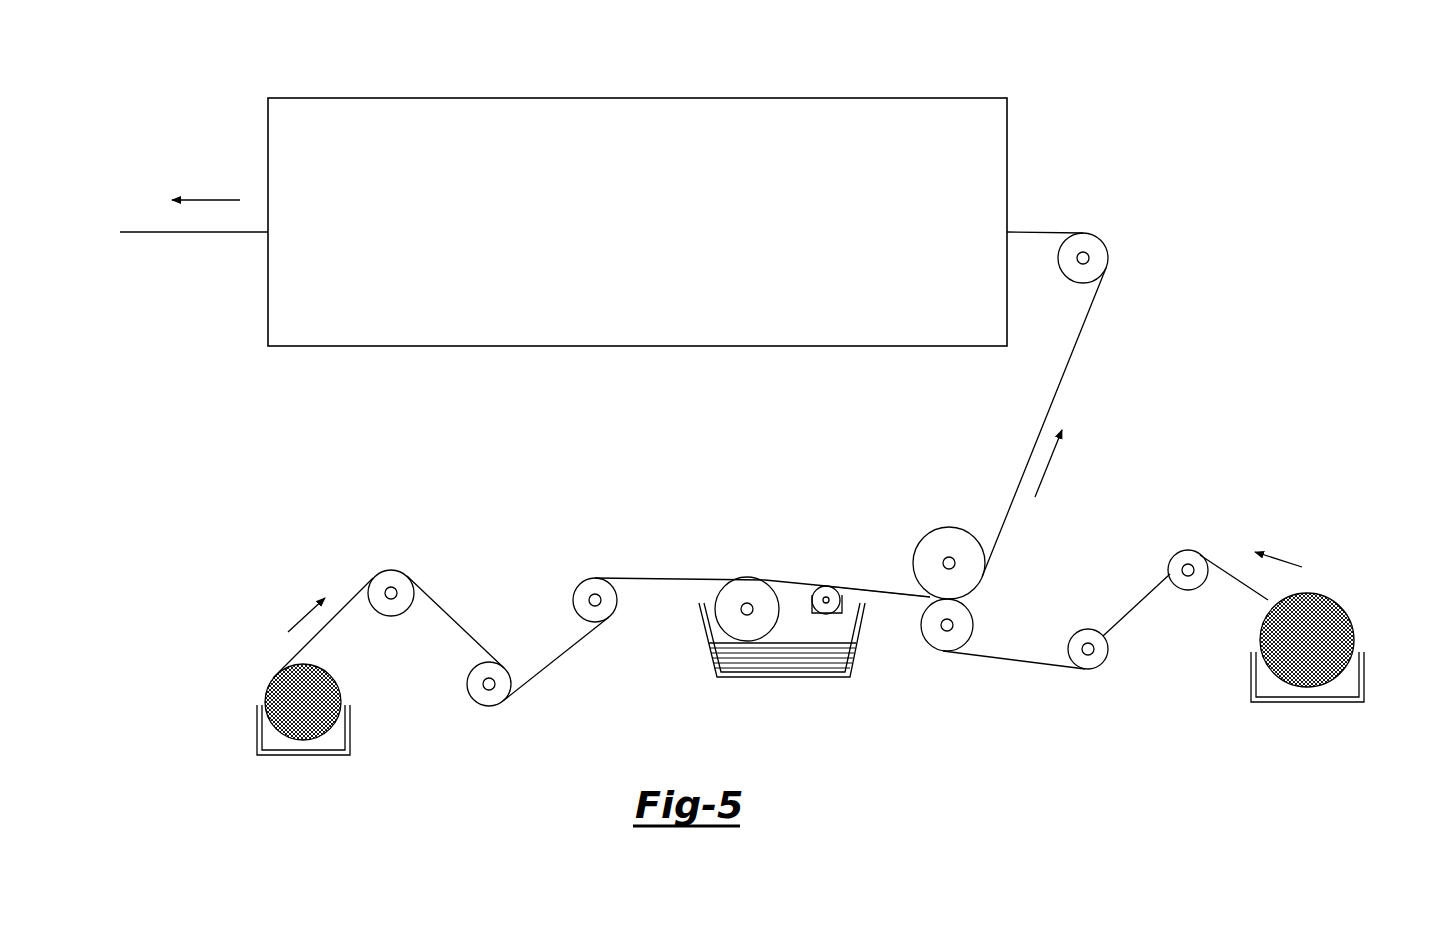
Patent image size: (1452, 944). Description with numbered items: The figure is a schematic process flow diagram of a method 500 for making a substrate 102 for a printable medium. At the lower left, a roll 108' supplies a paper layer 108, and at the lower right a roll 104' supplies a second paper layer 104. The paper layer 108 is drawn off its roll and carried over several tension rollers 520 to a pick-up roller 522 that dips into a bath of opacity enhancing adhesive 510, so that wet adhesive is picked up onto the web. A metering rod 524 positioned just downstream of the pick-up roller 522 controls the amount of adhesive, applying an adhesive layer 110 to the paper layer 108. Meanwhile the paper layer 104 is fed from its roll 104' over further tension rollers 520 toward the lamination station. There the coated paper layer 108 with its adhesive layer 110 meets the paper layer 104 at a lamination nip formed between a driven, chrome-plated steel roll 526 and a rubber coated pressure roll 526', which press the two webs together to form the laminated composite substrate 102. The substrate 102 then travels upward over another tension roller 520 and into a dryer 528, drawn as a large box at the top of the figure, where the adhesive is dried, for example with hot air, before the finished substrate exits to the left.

The method 500 is at (1132, 78).
The dryer 528 is at (652, 226).
The substrate 102 is at (189, 235).
The roll of paper layer 108' is at (342, 676).
The paper layer 108 is at (441, 635).
The tension rollers 520 is at (392, 572).
The pick-up roller 522 is at (740, 592).
The metering rod 524 is at (826, 586).
The bath of opacity enhancing adhesive 510 is at (784, 665).
The lamination roller 526 is at (949, 532).
The lamination roller 526' is at (939, 653).
The adhesive layer 110 is at (898, 600).
The paper layer 104 is at (1105, 595).
The roll of paper layer 104' is at (1345, 627).